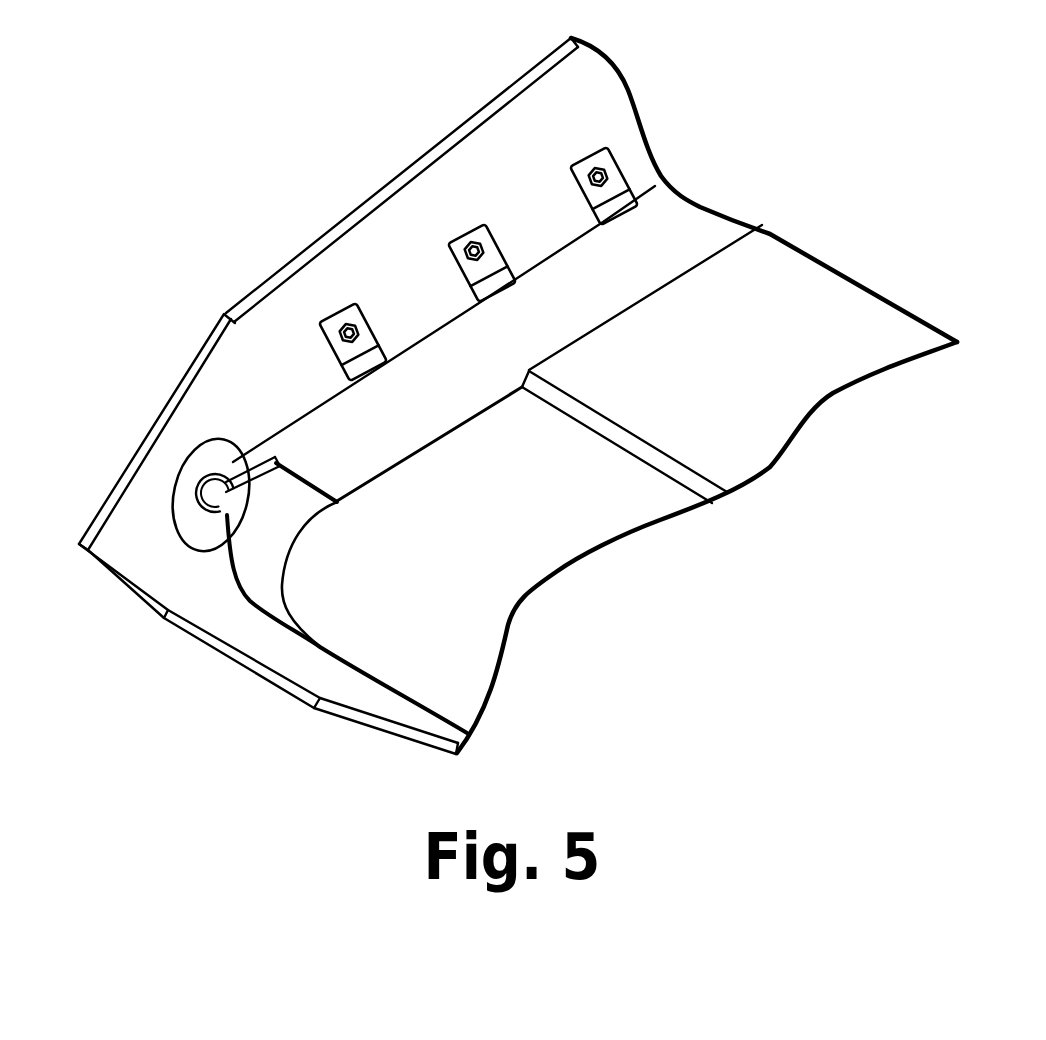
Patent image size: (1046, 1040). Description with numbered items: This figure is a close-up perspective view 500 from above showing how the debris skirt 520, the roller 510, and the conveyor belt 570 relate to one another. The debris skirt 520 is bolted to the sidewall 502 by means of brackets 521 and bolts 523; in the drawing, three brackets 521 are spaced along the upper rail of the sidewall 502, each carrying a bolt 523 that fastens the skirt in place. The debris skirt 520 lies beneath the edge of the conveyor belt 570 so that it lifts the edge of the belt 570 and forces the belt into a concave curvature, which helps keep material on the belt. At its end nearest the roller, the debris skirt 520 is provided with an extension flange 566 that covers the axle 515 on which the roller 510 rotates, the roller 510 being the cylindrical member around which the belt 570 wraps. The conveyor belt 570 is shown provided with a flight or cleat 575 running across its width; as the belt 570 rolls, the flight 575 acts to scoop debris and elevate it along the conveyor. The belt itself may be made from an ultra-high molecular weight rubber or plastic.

The close-up perspective view 500 is at (250, 140).
The sidewall 502 is at (230, 393).
The roller 510 is at (255, 567).
The axle 515 is at (210, 508).
The debris skirt 520 is at (652, 242).
The brackets 521 is at (356, 302).
The bolts 523 is at (612, 143).
The extension flange 566 is at (247, 475).
The conveyor belt 570 is at (443, 622).
The flight or cleat 575 is at (688, 468).